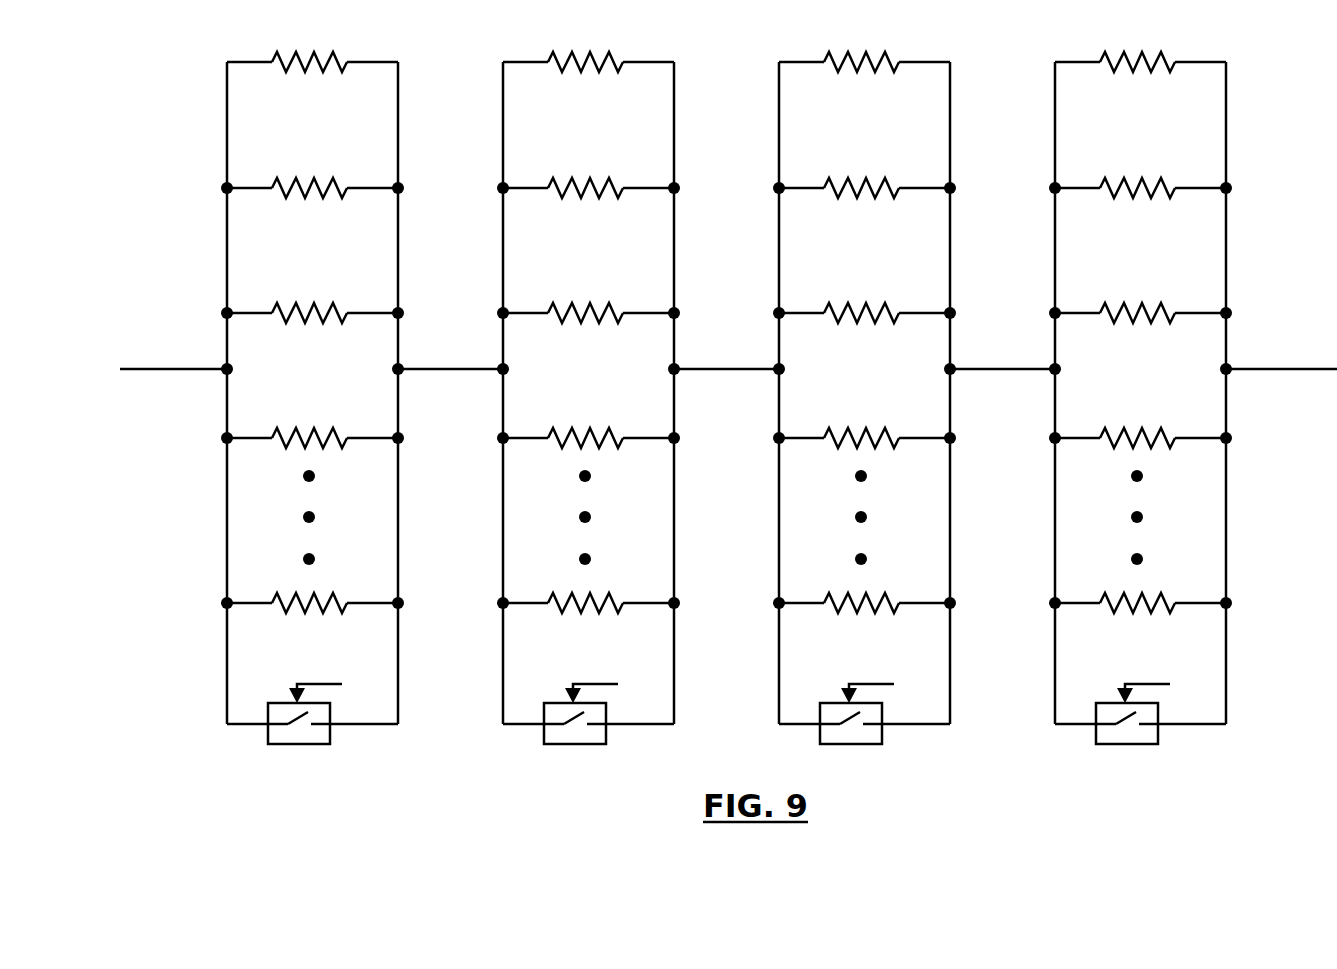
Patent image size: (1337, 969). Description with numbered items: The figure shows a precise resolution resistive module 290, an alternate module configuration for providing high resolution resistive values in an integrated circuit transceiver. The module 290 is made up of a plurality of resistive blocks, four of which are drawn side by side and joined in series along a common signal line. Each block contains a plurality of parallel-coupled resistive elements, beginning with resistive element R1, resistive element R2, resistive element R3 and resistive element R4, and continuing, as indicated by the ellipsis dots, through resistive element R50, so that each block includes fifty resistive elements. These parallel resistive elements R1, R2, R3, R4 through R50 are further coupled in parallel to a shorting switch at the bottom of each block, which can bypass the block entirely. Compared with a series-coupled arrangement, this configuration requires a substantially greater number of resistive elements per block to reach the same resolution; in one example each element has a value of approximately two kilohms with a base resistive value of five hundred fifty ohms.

The precise resolution resistive module 290 is at (1012, 883).
The resistive element R1 is at (733, 83).
The resistive element R2 is at (733, 209).
The resistive element R3 is at (733, 334).
The resistive element R4 is at (733, 460).
The resistive element R50 is at (737, 624).